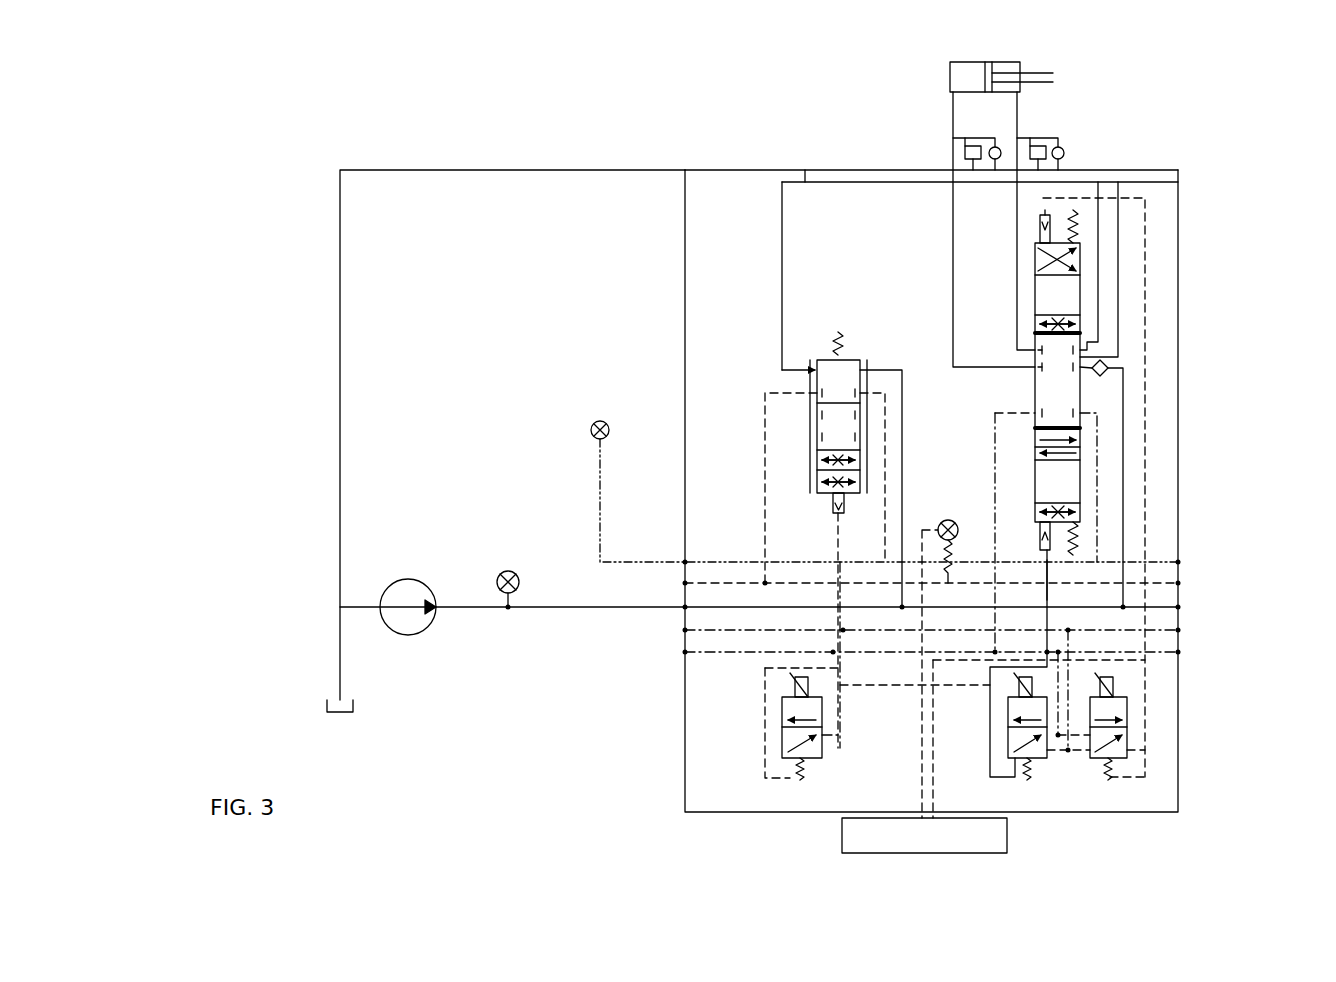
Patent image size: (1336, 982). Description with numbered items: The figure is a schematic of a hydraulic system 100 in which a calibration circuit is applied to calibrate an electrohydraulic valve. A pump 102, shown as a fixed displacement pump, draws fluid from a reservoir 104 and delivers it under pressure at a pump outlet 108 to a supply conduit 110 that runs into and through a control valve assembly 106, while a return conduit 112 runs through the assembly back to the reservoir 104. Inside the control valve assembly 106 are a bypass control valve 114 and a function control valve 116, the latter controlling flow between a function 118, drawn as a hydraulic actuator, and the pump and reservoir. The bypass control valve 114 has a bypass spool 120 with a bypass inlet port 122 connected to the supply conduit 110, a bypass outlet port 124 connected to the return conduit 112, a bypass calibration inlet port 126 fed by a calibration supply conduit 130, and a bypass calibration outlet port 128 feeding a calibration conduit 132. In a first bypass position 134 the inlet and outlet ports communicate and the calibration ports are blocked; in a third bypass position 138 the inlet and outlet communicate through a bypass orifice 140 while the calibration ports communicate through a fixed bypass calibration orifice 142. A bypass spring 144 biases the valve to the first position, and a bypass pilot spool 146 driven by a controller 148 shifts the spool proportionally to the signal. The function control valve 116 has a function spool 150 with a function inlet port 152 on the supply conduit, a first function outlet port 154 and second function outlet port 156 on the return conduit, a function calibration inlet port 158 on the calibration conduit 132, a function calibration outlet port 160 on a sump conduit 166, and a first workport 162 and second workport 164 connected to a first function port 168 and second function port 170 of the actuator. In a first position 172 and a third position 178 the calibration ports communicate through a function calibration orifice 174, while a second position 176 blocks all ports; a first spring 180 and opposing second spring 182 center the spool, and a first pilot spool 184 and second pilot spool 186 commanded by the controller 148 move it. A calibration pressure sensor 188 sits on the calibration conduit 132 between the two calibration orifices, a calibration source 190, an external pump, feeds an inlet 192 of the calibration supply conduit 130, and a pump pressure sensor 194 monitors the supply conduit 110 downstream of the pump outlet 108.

The hydraulic system 100 is at (514, 97).
The pump 102 is at (392, 628).
The reservoir 104 is at (326, 703).
The control valve assembly 106 is at (1206, 112).
The pump outlet 108 is at (440, 612).
The supply conduit 110 is at (608, 608).
The return conduit 112 is at (540, 170).
The bypass control valve 114 is at (866, 352).
The function control valve 116 is at (1088, 300).
The function 118 is at (936, 62).
The bypass spool 120 is at (850, 356).
The bypass inlet port 122 is at (872, 360).
The bypass outlet port 124 is at (816, 368).
The bypass calibration inlet port 126 is at (864, 392).
The bypass calibration outlet port 128 is at (815, 395).
The calibration supply conduit 130 is at (1147, 566).
The calibration conduit 132 is at (1180, 566).
The first bypass position 134 is at (806, 385).
The third bypass position 138 is at (806, 487).
The bypass orifice 140 is at (830, 460).
The bypass calibration orifice 142 is at (830, 482).
The bypass spring 144 is at (836, 336).
The bypass pilot spool 146 is at (833, 752).
The controller 148 is at (1008, 836).
The function spool 150 is at (1063, 548).
The function inlet port 152 is at (1104, 374).
The first function outlet port 154 is at (1100, 358).
The second function outlet port 156 is at (1096, 342).
The function calibration inlet port 158 is at (1086, 406).
The function calibration outlet port 160 is at (1020, 425).
The first workport 162 is at (1030, 373).
The second workport 164 is at (1024, 350).
The sump conduit 166 is at (920, 655).
The first function port 168 is at (950, 96).
The second function port 170 is at (1020, 94).
The first position 172 is at (1032, 268).
The function calibration orifice 174 is at (1058, 318).
The second position 176 is at (1027, 392).
The third position 178 is at (1034, 470).
The first spring 180 is at (1075, 535).
The second spring 182 is at (1073, 228).
The first pilot spool 184 is at (1156, 724).
The second pilot spool 186 is at (1047, 757).
The calibration pressure sensor 188 is at (938, 530).
The calibration source 190 is at (590, 431).
The inlet 192 is at (690, 560).
The pump pressure sensor 194 is at (522, 578).